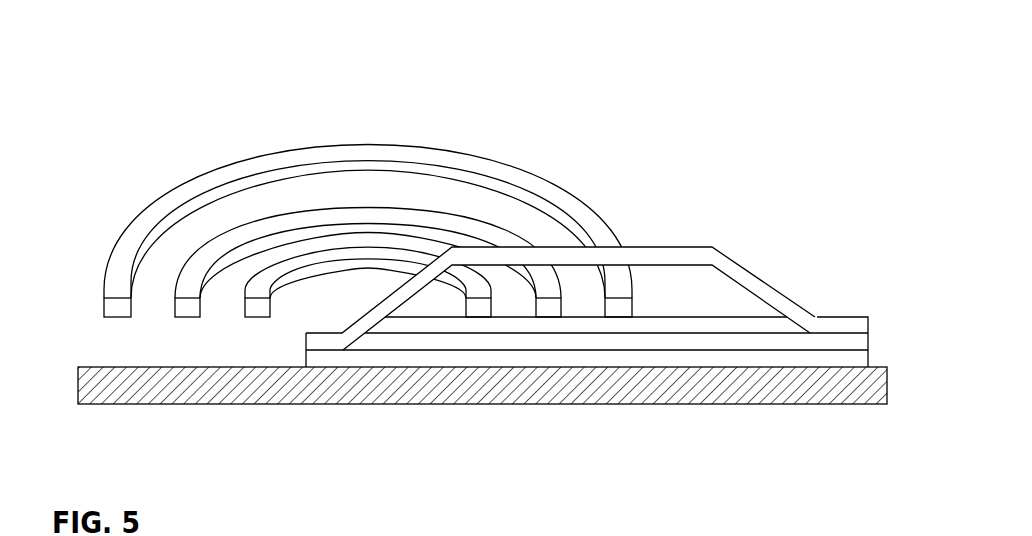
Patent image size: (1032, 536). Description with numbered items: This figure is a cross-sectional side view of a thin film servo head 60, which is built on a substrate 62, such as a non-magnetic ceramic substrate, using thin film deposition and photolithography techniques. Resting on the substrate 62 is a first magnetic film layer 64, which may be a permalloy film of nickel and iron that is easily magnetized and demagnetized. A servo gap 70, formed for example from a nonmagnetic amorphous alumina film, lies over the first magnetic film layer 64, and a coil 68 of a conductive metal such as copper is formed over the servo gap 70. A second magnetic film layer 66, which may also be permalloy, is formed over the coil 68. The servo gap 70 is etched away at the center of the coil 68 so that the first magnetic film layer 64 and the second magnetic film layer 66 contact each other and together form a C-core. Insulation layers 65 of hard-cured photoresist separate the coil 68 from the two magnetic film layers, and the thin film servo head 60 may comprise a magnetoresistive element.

The thin film servo head 60 is at (132, 42).
The substrate 62 is at (702, 393).
The first magnetic film layer 64 is at (322, 360).
The insulation layers 65 is at (710, 323).
The second magnetic film layer 66 is at (826, 324).
The coil 68 is at (271, 267).
The servo gap 70 is at (869, 342).